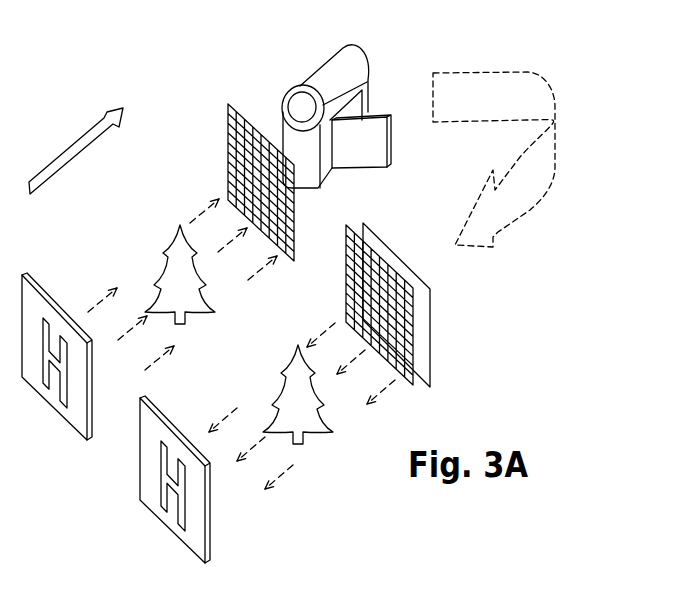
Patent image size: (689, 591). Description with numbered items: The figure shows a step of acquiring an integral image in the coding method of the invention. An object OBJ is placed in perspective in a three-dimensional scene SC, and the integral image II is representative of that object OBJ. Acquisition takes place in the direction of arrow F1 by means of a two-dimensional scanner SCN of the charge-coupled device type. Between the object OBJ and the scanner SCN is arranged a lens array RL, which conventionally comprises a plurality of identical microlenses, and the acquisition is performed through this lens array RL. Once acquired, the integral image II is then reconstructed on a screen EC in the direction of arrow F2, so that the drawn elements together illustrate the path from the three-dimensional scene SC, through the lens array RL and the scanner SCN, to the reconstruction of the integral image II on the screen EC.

The arrow F1 is at (80, 140).
The lens array RL is at (238, 110).
The scanner SCN is at (350, 62).
The arrow F2 is at (548, 112).
The object OBJ is at (172, 246).
The three-dimensional scene SC is at (100, 260).
The integral image II is at (423, 283).
The screen EC is at (414, 351).